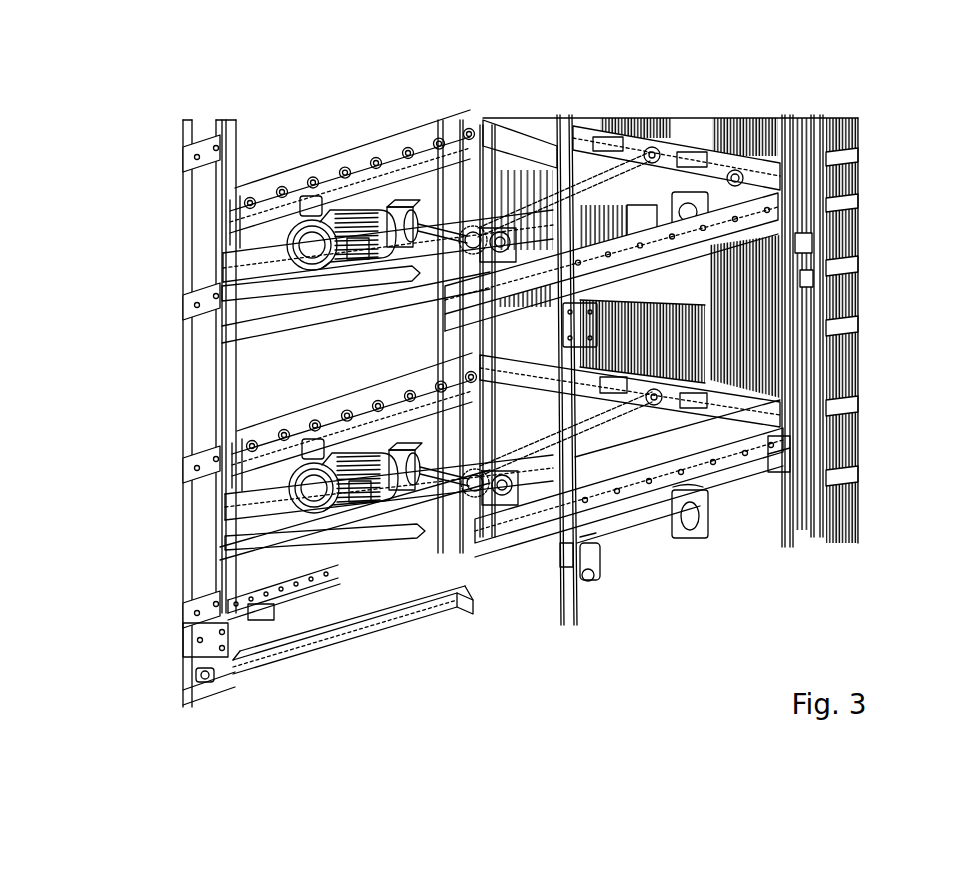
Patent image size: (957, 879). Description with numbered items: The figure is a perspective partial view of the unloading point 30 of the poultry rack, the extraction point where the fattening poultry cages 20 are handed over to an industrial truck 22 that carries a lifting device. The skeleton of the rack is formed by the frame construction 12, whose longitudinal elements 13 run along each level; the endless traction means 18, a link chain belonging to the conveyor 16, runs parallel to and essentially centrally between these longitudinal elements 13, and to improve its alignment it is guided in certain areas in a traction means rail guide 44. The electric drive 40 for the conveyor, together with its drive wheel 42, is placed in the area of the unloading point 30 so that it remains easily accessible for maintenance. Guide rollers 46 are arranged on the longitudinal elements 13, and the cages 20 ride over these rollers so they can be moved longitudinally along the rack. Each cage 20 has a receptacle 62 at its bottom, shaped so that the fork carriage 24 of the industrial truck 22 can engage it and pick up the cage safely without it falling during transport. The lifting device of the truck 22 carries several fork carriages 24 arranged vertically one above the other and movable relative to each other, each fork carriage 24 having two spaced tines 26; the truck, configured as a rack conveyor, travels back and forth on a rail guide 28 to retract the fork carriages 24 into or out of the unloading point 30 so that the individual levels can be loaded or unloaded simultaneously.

The frame construction 12 is at (821, 120).
The longitudinal elements 13 is at (742, 470).
The conveyor 16 is at (250, 425).
The traction means 18 is at (680, 422).
The poultry cage 20 is at (860, 357).
The industrial truck 22 is at (195, 678).
The fork carriage 24 is at (267, 612).
The tines 26 is at (338, 562).
The rail guide 28 is at (403, 627).
The unloading point 30 is at (432, 210).
The drive 40 is at (185, 432).
The drive wheel 42 is at (495, 505).
The traction means rail guide 44 is at (592, 384).
The guide rollers 46 is at (380, 380).
The receptacle 62 is at (782, 448).